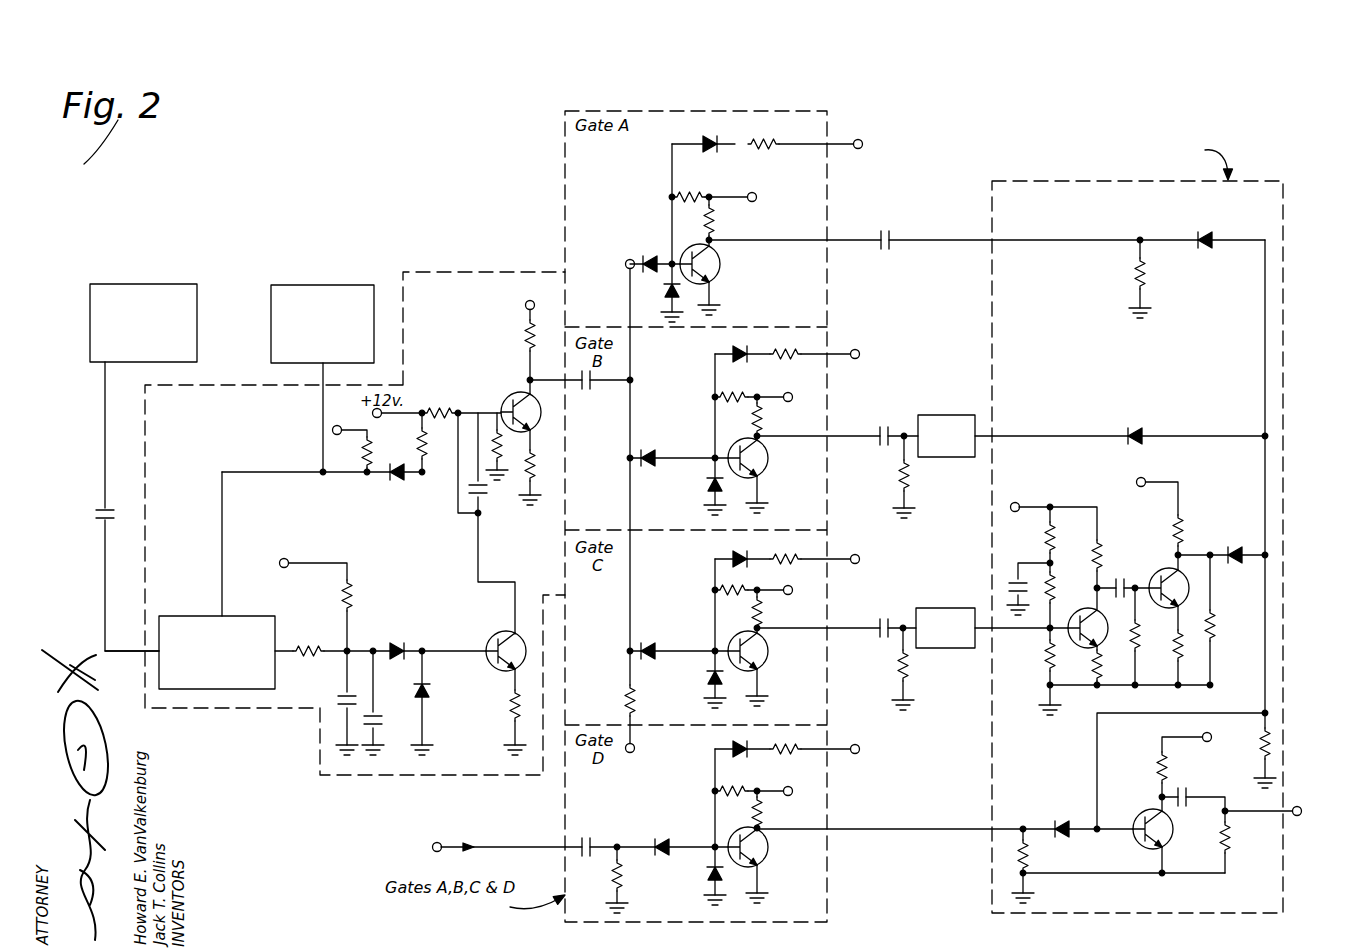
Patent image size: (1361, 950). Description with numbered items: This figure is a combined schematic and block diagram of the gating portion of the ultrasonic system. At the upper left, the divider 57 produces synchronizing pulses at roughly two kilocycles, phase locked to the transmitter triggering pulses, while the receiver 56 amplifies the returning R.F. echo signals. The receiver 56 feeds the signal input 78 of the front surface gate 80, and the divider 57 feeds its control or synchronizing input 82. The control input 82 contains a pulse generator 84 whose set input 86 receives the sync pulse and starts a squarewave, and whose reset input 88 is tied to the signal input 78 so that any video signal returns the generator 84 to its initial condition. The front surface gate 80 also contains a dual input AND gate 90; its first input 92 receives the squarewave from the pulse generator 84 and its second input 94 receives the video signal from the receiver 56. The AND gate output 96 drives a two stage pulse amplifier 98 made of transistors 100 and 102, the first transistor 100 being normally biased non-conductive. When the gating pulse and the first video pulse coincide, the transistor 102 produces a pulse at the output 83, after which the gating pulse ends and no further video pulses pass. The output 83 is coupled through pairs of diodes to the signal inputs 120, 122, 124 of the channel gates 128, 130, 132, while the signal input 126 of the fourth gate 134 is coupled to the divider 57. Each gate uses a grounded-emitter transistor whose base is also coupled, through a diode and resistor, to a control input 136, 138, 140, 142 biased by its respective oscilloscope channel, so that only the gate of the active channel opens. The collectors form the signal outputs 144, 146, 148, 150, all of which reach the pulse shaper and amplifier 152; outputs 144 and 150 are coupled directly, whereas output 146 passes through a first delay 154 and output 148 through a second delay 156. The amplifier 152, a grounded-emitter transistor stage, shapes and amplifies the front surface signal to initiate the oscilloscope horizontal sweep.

The receiver 56 is at (335, 286).
The frequency divider 57 is at (175, 285).
The signal input 78 is at (325, 392).
The front surface gate 80 is at (484, 272).
The control or synchronizing input 82 is at (105, 634).
The output 83 is at (577, 384).
The pulse generator 84 is at (280, 686).
The set input 86 is at (157, 640).
The reset input 88 is at (244, 617).
The dual input AND gate 90 is at (409, 565).
The first input 92 is at (350, 648).
The second input 94 is at (367, 476).
The output 96 is at (424, 651).
The two stage pulse amplifier 98 is at (479, 601).
The transistor 100 is at (486, 665).
The transistor 102 is at (520, 398).
The signal input 120 is at (629, 259).
The signal input 122 is at (631, 461).
The signal input 124 is at (631, 649).
The signal input 126 is at (618, 845).
The gate 128 is at (834, 199).
The gate 130 is at (834, 396).
The gate 132 is at (834, 599).
The gate 134 is at (834, 806).
The control input 136 is at (829, 143).
The control input 138 is at (830, 352).
The control input 140 is at (830, 556).
The control input 142 is at (830, 748).
The signal output 144 is at (829, 241).
The signal output 146 is at (829, 438).
The signal output 148 is at (829, 630).
The signal output 150 is at (829, 830).
The pulse shaper and amplifier 152 is at (1288, 321).
The first delay 154 is at (970, 400).
The second delay 156 is at (967, 596).